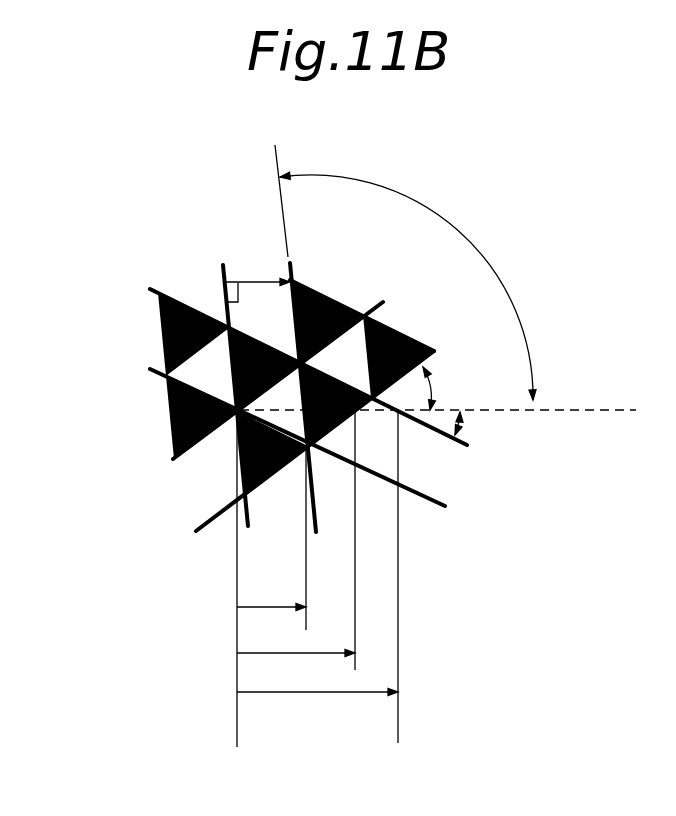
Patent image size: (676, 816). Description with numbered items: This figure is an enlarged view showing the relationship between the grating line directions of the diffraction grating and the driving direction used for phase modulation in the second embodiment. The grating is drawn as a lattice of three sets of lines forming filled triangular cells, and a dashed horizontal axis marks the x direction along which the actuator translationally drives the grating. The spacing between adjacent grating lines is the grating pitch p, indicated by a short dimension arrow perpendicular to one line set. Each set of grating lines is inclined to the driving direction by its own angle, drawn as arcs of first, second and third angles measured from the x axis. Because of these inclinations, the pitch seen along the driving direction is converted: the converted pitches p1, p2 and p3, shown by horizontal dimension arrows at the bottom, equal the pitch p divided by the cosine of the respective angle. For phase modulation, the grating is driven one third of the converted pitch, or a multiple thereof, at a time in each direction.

The pitch of the grating p is at (257, 280).
The converted pitch in the driving direction p1 is at (317, 680).
The converted pitch in the driving direction p2 is at (296, 640).
The converted pitch in the driving direction p3 is at (271, 595).
The x direction x is at (447, 407).